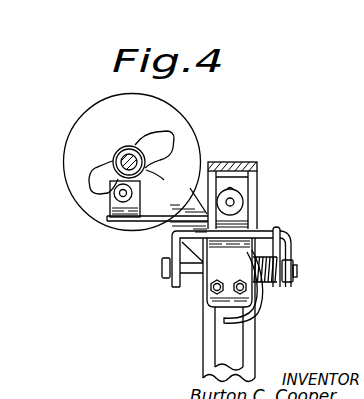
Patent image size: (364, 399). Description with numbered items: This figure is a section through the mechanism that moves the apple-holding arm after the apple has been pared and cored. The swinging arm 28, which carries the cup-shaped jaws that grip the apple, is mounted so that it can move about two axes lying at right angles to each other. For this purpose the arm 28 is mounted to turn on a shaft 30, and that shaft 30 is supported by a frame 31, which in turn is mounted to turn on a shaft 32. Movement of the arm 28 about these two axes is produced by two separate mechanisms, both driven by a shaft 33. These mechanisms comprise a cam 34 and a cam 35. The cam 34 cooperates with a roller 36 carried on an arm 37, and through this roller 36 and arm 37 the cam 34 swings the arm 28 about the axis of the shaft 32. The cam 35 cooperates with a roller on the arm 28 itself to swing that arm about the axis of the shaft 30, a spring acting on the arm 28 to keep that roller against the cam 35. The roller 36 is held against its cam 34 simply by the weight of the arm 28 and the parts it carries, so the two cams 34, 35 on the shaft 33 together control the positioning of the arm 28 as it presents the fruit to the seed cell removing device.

The swinging arm 28 is at (222, 333).
The shaft 30 is at (193, 282).
The frame 31 is at (262, 224).
The shaft 32 is at (243, 200).
The shaft 33 is at (121, 152).
The cam 34 is at (170, 143).
The cam 35 is at (148, 110).
The roller 36 is at (122, 194).
The arm 37 is at (150, 218).